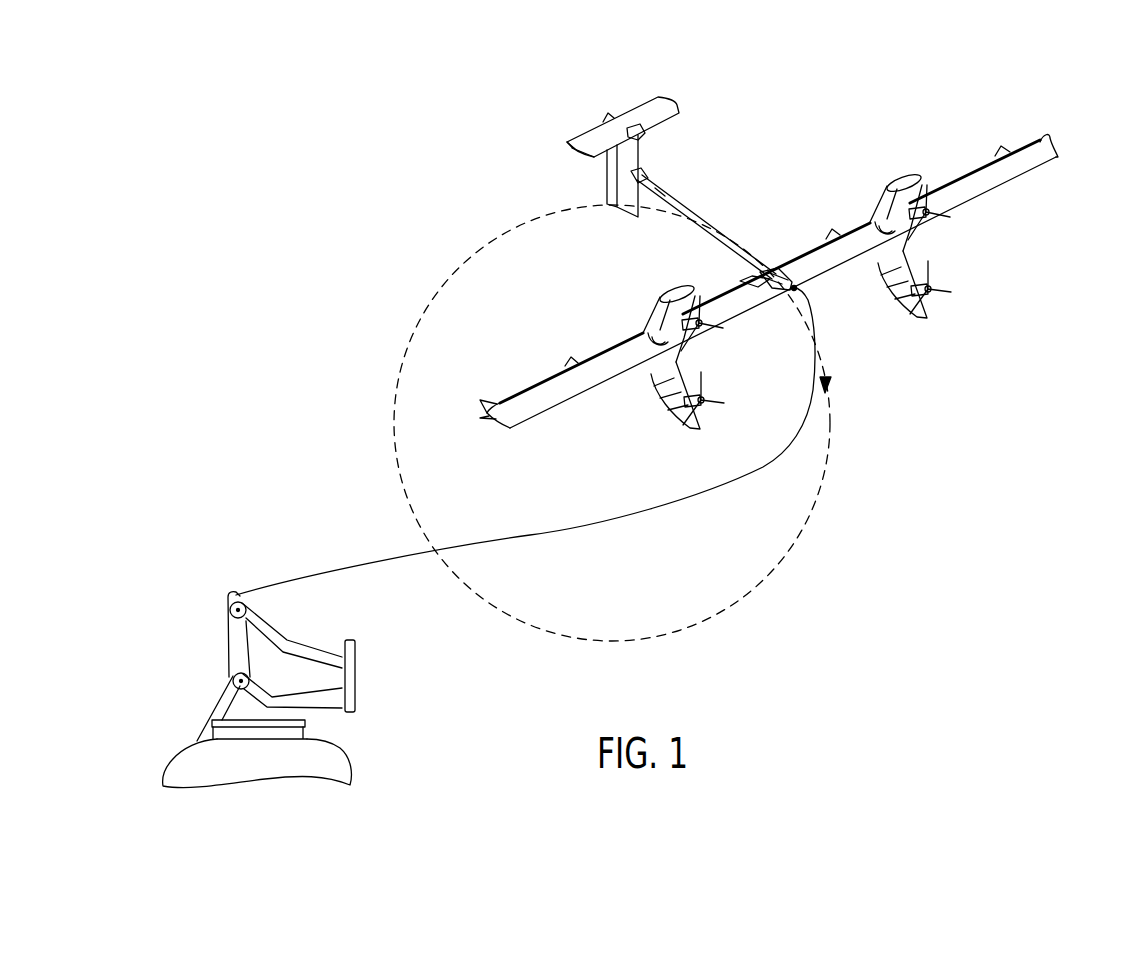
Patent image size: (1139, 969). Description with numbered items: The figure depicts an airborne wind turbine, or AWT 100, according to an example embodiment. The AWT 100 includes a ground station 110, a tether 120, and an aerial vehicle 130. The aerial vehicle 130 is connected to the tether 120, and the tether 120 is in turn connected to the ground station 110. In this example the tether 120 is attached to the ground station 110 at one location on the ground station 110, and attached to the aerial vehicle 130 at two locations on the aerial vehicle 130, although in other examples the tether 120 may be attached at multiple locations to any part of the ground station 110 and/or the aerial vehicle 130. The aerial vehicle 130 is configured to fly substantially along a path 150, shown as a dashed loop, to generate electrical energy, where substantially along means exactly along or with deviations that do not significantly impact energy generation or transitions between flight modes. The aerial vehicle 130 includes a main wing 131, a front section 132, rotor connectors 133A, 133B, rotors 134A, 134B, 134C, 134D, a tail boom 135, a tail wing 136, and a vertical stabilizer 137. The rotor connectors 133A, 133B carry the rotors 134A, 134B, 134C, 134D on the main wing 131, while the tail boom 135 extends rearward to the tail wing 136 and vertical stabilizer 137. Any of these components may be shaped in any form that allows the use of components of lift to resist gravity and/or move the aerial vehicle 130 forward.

The airborne wind turbine 100 is at (229, 259).
The ground station 110 is at (235, 648).
The tether 120 is at (347, 562).
The aerial vehicle 130 is at (1132, 126).
The main wing 131 is at (830, 260).
The front section 132 is at (792, 297).
The rotor connector 133A is at (883, 189).
The rotor connector 133B is at (658, 302).
The rotor 134A is at (933, 218).
The rotor 134B is at (933, 294).
The rotor 134C is at (692, 337).
The rotor 134D is at (706, 413).
The tail boom 135 is at (692, 213).
The tail wing 136 is at (672, 97).
The vertical stabilizer 137 is at (629, 213).
The path 150 is at (442, 273).